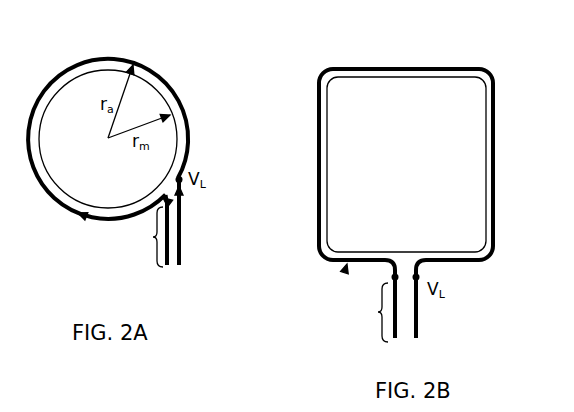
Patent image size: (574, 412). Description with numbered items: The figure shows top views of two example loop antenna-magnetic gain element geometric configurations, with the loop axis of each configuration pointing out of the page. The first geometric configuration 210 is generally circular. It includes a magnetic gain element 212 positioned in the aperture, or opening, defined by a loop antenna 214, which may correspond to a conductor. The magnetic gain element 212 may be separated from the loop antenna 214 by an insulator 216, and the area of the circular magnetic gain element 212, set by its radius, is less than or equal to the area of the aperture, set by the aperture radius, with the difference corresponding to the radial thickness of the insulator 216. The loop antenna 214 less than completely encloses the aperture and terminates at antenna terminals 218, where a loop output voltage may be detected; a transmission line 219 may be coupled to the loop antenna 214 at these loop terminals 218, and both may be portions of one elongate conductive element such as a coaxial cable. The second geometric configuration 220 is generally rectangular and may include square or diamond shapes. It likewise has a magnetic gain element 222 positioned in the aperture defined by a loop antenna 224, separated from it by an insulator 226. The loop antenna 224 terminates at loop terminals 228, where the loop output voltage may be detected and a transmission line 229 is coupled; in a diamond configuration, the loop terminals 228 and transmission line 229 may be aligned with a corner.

In FIG. 2A, the geometric configuration 210 is at (87, 50).
In FIG. 2A, the magnetic gain element 212 is at (122, 178).
In FIG. 2A, the loop antenna 214 is at (195, 89).
In FIG. 2A, the insulator 216 is at (78, 214).
In FIG. 2A, the antenna terminals 218 is at (186, 194).
In FIG. 2A, the transmission line 219 is at (152, 237).
In FIG. 2B, the geometric configuration 220 is at (353, 53).
In FIG. 2B, the magnetic gain element 222 is at (417, 178).
In FIG. 2B, the loop antenna 224 is at (495, 90).
In FIG. 2B, the insulator 226 is at (347, 265).
In FIG. 2B, the loop terminals 228 is at (397, 257).
In FIG. 2B, the transmission line 229 is at (377, 312).